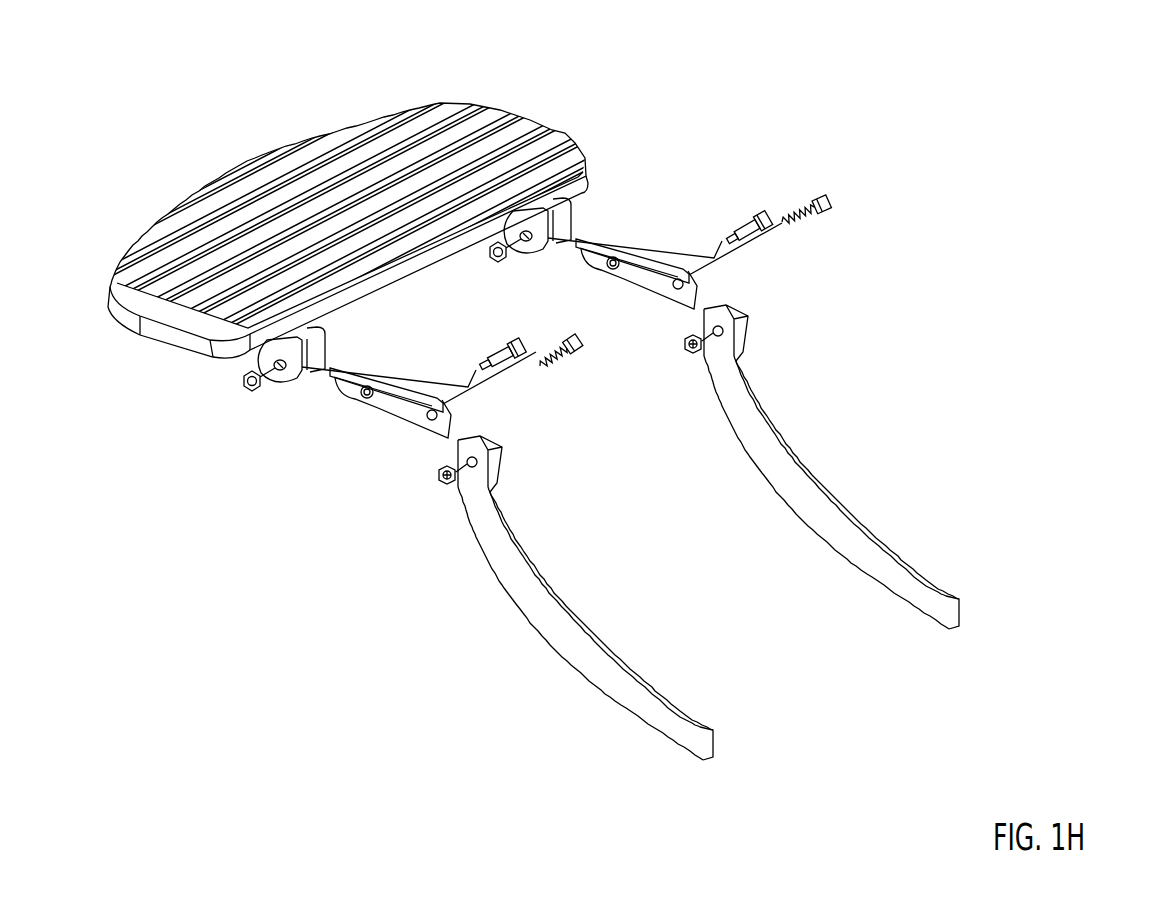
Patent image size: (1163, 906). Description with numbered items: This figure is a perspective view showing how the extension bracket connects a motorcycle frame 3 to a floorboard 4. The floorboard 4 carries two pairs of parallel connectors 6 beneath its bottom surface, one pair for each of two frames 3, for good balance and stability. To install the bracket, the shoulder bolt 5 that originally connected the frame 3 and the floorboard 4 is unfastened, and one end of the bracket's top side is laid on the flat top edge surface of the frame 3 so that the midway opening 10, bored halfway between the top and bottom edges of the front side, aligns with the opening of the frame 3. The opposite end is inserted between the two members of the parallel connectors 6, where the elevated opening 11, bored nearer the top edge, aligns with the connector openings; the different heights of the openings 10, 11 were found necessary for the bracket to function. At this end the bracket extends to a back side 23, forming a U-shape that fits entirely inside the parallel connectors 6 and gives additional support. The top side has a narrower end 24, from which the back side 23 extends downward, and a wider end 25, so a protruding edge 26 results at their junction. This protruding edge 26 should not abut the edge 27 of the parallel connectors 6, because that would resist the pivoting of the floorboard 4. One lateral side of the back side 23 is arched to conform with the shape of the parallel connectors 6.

The frame 3 is at (525, 593).
The floorboard 4 is at (465, 133).
The shoulder bolt 5 is at (497, 352).
The parallel connectors 6 is at (282, 377).
The midway opening 10 is at (432, 420).
The elevated opening 11 is at (373, 415).
The back side 23 is at (357, 396).
The narrower end 24 is at (358, 365).
The wider end 25 is at (403, 387).
The protruding edge 26 is at (373, 388).
The edge of the parallel connectors 27 is at (298, 382).